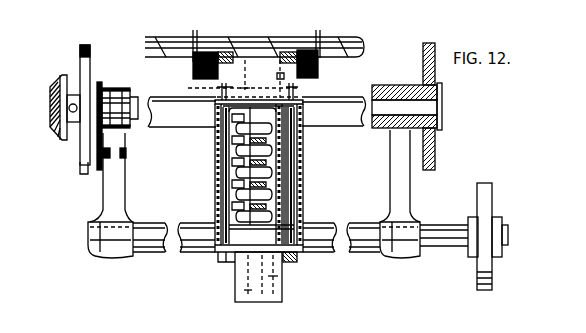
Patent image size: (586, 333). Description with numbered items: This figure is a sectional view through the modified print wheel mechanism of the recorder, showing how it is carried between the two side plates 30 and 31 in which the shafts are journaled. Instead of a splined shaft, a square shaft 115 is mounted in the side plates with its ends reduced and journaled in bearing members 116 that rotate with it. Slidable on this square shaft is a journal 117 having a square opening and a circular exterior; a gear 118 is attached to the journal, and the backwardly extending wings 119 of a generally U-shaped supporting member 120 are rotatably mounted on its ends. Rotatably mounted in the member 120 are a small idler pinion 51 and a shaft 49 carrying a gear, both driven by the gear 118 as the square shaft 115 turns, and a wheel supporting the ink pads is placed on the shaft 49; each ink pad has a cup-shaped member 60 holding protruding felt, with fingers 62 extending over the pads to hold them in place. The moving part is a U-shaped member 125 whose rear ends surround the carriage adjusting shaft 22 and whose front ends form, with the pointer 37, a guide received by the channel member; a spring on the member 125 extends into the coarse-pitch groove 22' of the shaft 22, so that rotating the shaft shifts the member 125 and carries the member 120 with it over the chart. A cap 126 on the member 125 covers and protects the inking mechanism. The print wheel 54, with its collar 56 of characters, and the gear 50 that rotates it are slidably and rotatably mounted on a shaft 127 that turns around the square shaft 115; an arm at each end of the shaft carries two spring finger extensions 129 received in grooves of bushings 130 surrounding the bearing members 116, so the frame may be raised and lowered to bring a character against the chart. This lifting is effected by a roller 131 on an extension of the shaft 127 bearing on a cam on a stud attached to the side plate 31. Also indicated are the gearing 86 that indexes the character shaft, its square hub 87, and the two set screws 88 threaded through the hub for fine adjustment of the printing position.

The carriage adjusting shaft 22 is at (263, 32).
The groove 22' is at (269, 34).
The side plate 30 is at (83, 46).
The side plate 31 is at (433, 160).
The pointer 37 is at (240, 281).
The shaft 49 is at (288, 168).
The gear 50 is at (297, 262).
The idler pinion 51 is at (282, 147).
The print wheel 54 is at (255, 289).
The collar 56 is at (270, 288).
The cup-shaped member 60 is at (234, 205).
The fingers 62 is at (238, 172).
The gearing 86 is at (68, 136).
The square hub 87 is at (80, 170).
The set screws 88 is at (72, 95).
The square shaft 115 is at (152, 108).
The bearing members 116 is at (100, 172).
The journal 117 is at (240, 44).
The gear 118 is at (279, 46).
The wings 119 is at (326, 88).
The supporting member 120 is at (216, 133).
The U-shaped member 125 is at (318, 68).
The cap 126 is at (216, 152).
The shaft 127 is at (187, 256).
The spring finger extensions 129 is at (111, 85).
The bushings 130 is at (99, 84).
The roller 131 is at (485, 198).